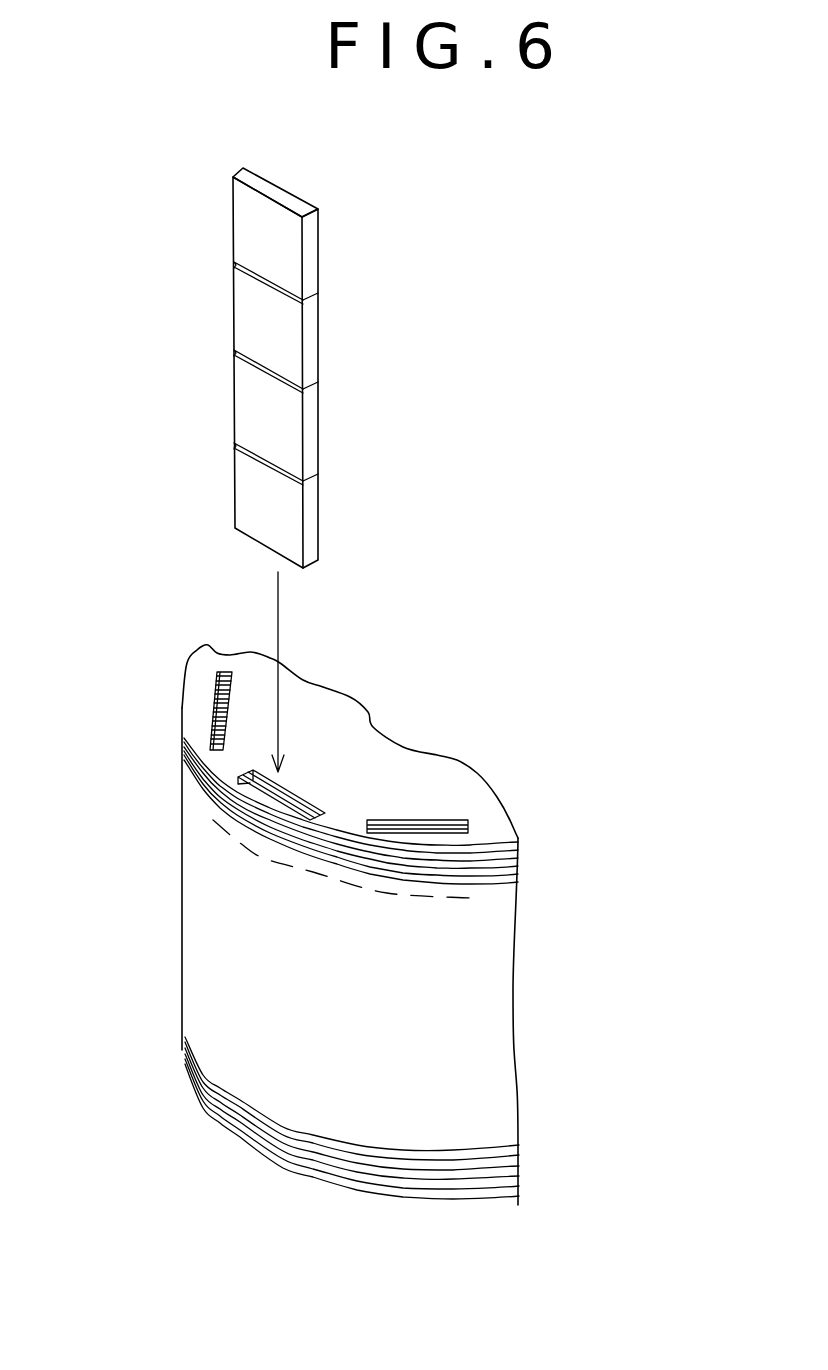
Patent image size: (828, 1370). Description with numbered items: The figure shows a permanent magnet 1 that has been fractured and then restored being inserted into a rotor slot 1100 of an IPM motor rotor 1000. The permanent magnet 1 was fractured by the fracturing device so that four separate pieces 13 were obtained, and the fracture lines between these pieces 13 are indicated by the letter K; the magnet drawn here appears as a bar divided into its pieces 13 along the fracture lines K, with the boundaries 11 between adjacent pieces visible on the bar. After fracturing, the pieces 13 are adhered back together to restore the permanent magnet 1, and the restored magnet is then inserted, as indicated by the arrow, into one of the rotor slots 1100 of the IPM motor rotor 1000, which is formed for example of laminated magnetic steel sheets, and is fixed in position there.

The permanent magnet 1 is at (345, 204).
The groove / dividing line 11 is at (258, 281).
The pieces 13 is at (247, 221).
The fracture lines K is at (303, 301).
The IPM motor rotor 1000 is at (507, 875).
The rotor slot 1100 is at (217, 692).